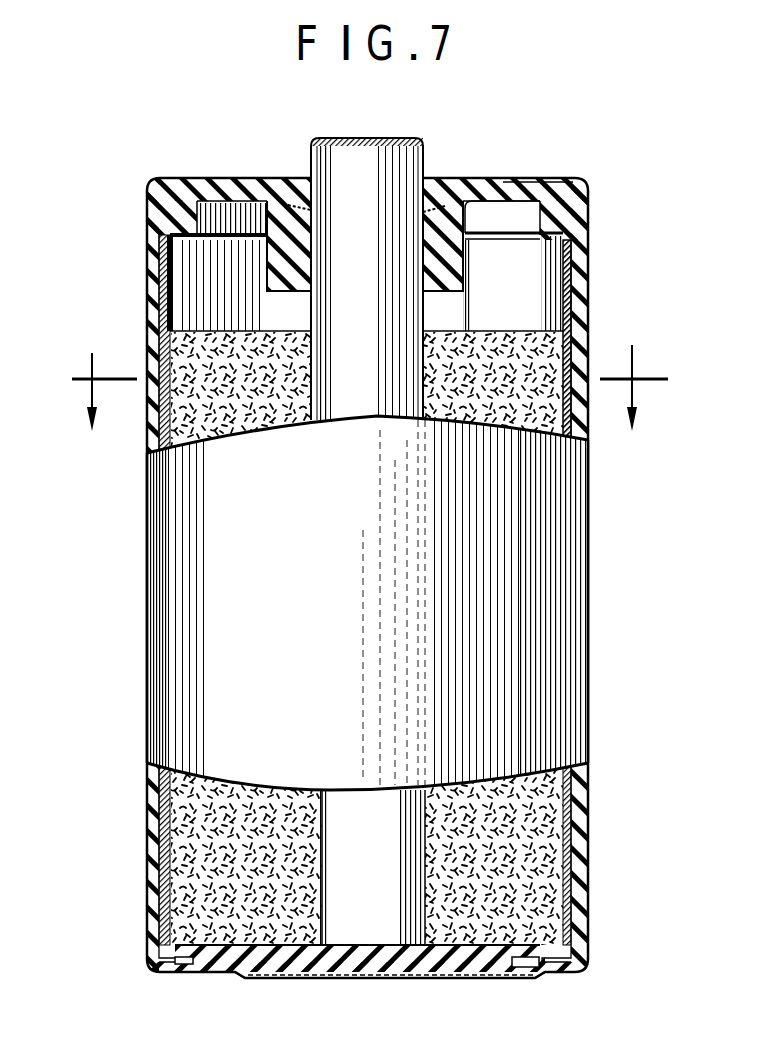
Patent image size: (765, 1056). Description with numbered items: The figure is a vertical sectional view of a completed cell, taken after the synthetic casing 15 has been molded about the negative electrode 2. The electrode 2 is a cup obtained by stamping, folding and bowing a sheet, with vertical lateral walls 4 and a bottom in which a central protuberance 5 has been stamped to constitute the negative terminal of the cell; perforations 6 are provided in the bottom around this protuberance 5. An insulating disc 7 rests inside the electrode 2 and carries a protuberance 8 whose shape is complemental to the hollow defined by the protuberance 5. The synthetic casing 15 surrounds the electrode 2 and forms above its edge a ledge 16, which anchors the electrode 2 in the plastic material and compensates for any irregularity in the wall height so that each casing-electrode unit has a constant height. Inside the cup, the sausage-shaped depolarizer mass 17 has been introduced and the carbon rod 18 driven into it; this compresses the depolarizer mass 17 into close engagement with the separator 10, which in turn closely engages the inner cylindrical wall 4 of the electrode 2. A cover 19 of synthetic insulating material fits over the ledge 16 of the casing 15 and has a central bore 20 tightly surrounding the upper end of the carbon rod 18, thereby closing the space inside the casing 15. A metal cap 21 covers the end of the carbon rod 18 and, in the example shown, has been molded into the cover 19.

The electrode 2 is at (589, 829).
The vertical lateral walls 4 is at (569, 866).
The protuberance 5 is at (343, 979).
The perforations 6 is at (542, 973).
The insulating disc 7 is at (378, 976).
The protuberance 8 is at (370, 411).
The separator 10 is at (188, 850).
The synthetic casing 15 is at (577, 332).
The ledge 16 is at (577, 222).
The depolarizer mass 17 is at (494, 368).
The carbon rod 18 is at (370, 186).
The cover 19 is at (178, 210).
The central bore 20 is at (315, 238).
The metal cap 21 is at (425, 164).